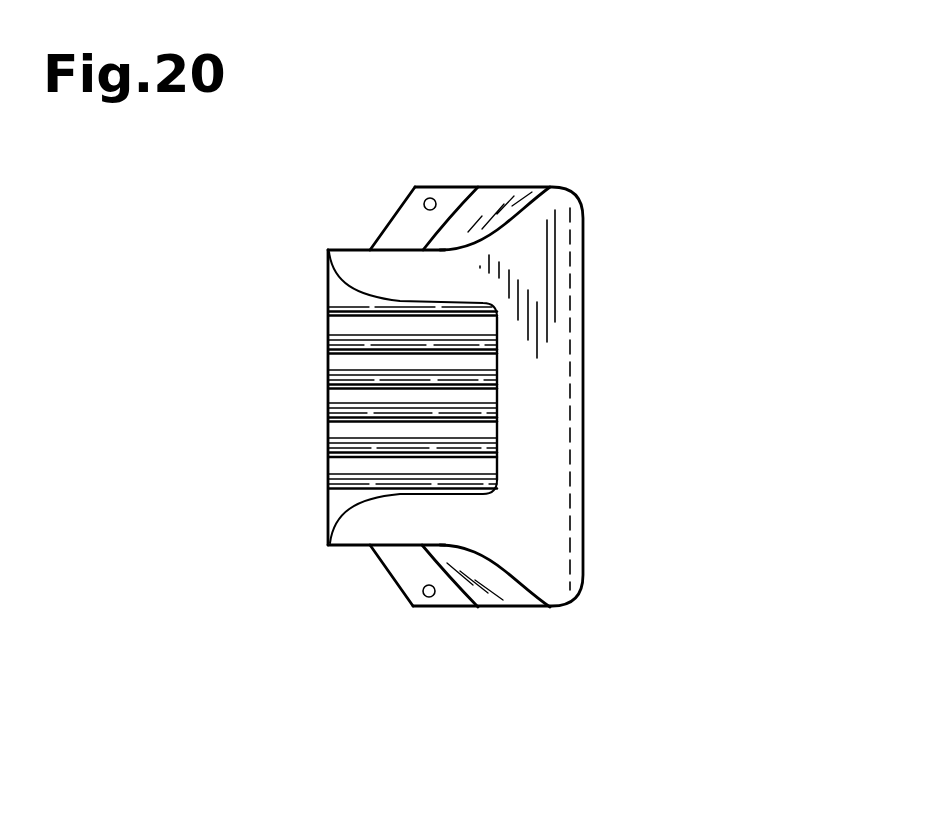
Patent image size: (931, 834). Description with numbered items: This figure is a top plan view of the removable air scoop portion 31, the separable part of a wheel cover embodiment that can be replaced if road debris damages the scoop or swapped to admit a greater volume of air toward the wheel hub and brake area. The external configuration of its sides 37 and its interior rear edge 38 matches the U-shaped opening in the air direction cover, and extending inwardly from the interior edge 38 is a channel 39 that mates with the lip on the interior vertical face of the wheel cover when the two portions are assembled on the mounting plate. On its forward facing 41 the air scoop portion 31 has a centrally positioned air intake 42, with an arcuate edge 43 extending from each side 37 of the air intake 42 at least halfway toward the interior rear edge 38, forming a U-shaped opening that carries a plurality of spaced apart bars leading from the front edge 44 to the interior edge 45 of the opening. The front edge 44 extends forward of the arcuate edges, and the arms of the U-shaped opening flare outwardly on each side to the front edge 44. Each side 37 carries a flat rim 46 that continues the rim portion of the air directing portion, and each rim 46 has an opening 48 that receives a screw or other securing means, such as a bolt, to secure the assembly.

The removable air scoop portion 31 is at (518, 501).
The side 37 is at (345, 248).
The interior edge 38 is at (558, 362).
The channel 39 is at (573, 413).
The forward facing 41 is at (312, 400).
The air intake 42 is at (483, 502).
The arcuate edge 43 is at (432, 300).
The front edge 44 is at (328, 430).
The interior edge of U-shaped opening 45 is at (497, 418).
The flat rim 46 is at (397, 235).
The opening 48 is at (432, 199).